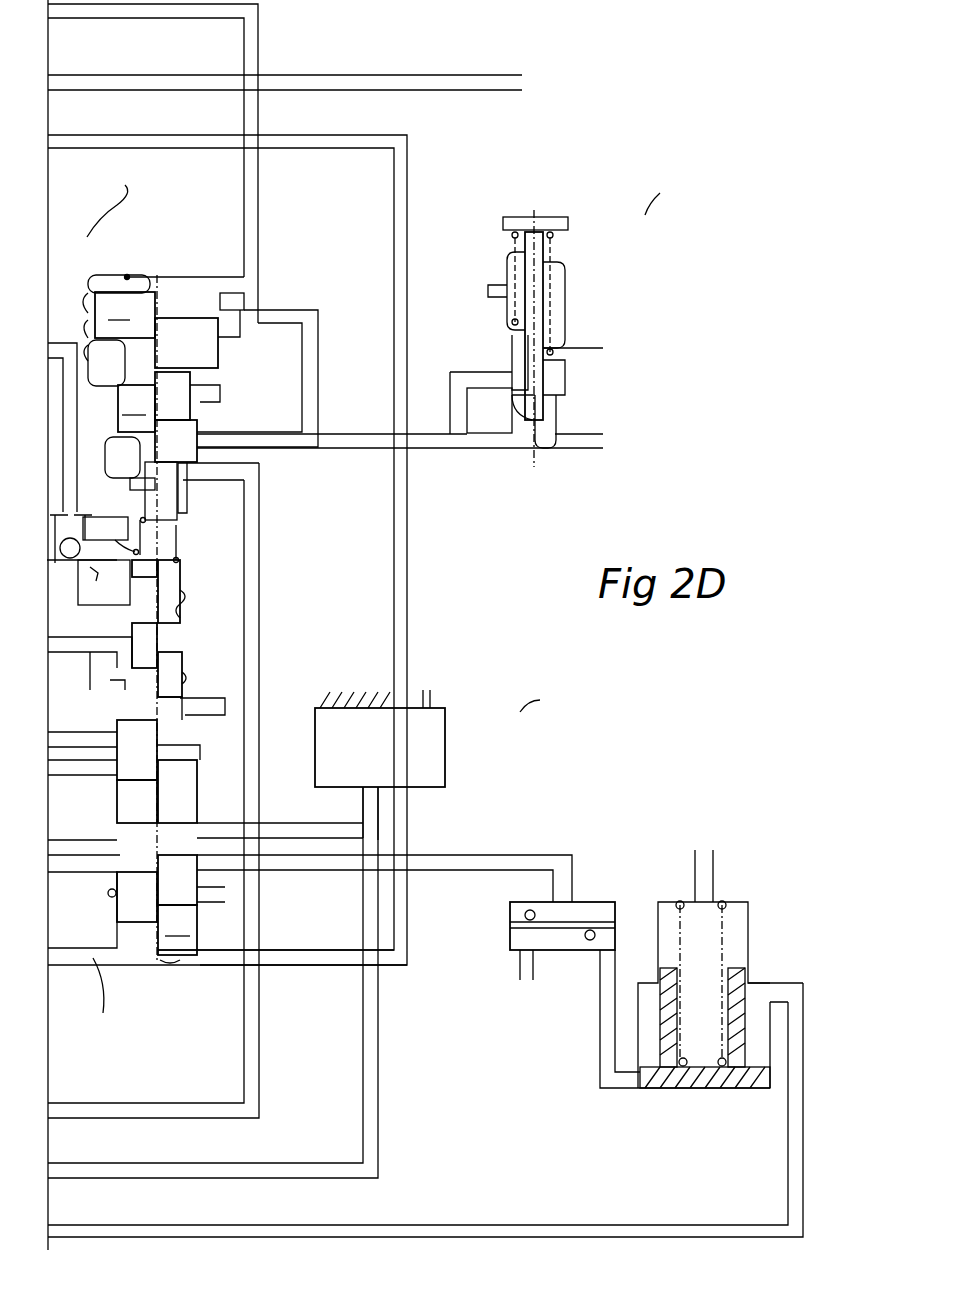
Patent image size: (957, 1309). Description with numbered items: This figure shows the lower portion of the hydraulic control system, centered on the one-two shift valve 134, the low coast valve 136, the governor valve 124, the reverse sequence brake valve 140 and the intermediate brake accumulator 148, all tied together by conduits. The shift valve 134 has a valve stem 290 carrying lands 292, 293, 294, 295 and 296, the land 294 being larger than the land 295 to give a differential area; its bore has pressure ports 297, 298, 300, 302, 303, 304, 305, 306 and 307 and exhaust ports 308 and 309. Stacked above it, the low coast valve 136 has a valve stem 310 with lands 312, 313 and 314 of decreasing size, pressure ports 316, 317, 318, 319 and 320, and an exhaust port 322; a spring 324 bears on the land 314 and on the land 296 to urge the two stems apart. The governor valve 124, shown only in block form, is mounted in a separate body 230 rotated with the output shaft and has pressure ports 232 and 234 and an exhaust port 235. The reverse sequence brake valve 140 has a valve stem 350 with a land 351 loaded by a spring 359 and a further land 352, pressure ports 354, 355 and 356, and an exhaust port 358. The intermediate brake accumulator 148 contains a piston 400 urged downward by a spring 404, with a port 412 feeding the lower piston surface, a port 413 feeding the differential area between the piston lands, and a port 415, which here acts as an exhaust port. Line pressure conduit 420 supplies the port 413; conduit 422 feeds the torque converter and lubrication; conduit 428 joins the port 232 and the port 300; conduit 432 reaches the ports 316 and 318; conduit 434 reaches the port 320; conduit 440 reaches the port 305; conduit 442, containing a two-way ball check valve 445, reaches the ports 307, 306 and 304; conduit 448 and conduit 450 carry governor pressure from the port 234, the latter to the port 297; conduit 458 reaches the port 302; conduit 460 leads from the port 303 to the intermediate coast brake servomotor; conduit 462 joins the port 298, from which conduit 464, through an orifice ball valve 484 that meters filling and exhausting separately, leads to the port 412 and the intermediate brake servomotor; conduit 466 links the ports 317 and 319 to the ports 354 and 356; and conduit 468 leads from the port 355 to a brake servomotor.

The governor valve 124 is at (452, 740).
The 1:2 shift valve 134 is at (106, 918).
The low coast valve 136 is at (82, 270).
The reverse sequence brake valve 140 is at (584, 242).
The intermediate brake accumulator 148 is at (766, 938).
The separate body 230 is at (341, 700).
The pressure port 232 is at (360, 800).
The pressure port 234 is at (407, 790).
The exhaust port 235 is at (425, 706).
The valve stem 290 is at (206, 927).
The land 292 is at (180, 930).
The land 293 is at (197, 828).
The land 294 is at (199, 748).
The land 295 is at (182, 670).
The land 296 is at (182, 590).
The pressure port 297 is at (174, 967).
The pressure port 298 is at (157, 888).
The pressure port 300 is at (116, 840).
The pressure port 302 is at (201, 776).
The pressure port 303 is at (203, 724).
The pressure port 304 is at (186, 680).
The pressure port 305 is at (182, 645).
The pressure port 306 is at (182, 618).
The pressure port 307 is at (186, 556).
The exhaust port 308 is at (110, 900).
The exhaust port 309 is at (124, 716).
The valve stem 310 is at (127, 276).
The land 312 is at (125, 315).
The land 313 is at (139, 386).
The land 314 is at (128, 489).
The pressure port 316 is at (226, 282).
The pressure port 317 is at (232, 306).
The pressure port 318 is at (218, 346).
The pressure port 319 is at (205, 440).
The pressure port 320 is at (191, 475).
The exhaust port 322 is at (214, 409).
The spring 324 is at (109, 534).
The valve stem 350 is at (550, 280).
The land 351 is at (562, 368).
The valve land 352 is at (558, 426).
The pressure port 354 is at (504, 379).
The pressure port 355 is at (560, 345).
The pressure port 356 is at (508, 450).
The exhaust port 358 is at (488, 300).
The spring 359 is at (548, 230).
The piston 400 is at (704, 1090).
The spring 404 is at (728, 905).
The port 412 is at (635, 1088).
The port 413 is at (771, 986).
The port 415 is at (713, 895).
The main or line pressure conduit 420 is at (814, 1068).
The conduit 422 is at (363, 74).
The conduit 428 is at (384, 1048).
The conduit 432 is at (258, 44).
The conduit 434 is at (261, 565).
The conduit 440 is at (106, 700).
The conduit 442 is at (63, 340).
The two-way ball check valve 445 is at (106, 582).
The conduit 448 is at (314, 135).
The conduit 450 is at (96, 965).
The conduit 458 is at (82, 804).
The conduit 460 is at (82, 773).
The conduit 462 is at (95, 870).
The conduit 464 is at (482, 857).
The conduit 466 is at (591, 450).
The conduit 468 is at (618, 347).
The orifice ball valve 484 is at (598, 895).